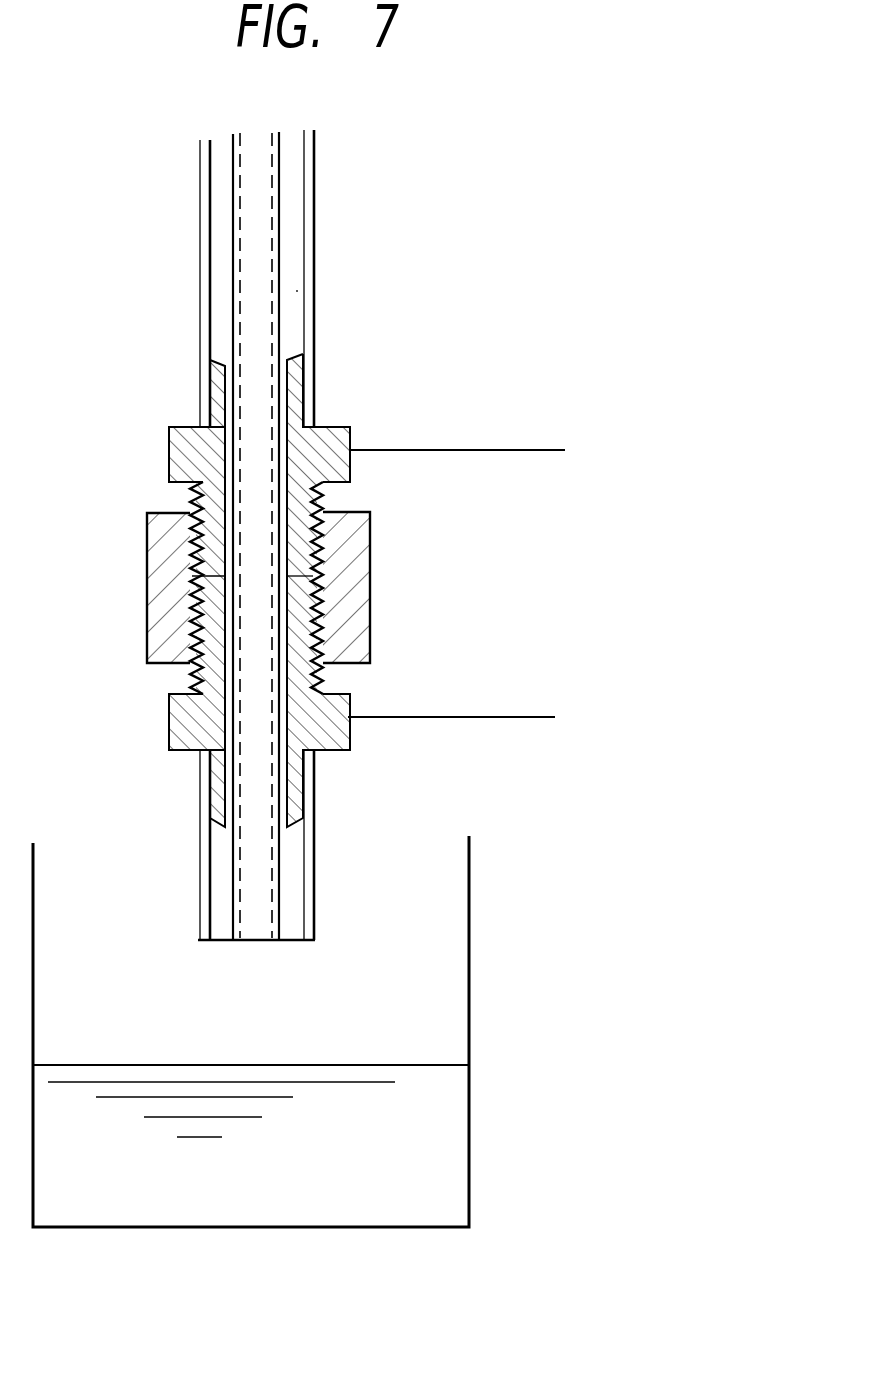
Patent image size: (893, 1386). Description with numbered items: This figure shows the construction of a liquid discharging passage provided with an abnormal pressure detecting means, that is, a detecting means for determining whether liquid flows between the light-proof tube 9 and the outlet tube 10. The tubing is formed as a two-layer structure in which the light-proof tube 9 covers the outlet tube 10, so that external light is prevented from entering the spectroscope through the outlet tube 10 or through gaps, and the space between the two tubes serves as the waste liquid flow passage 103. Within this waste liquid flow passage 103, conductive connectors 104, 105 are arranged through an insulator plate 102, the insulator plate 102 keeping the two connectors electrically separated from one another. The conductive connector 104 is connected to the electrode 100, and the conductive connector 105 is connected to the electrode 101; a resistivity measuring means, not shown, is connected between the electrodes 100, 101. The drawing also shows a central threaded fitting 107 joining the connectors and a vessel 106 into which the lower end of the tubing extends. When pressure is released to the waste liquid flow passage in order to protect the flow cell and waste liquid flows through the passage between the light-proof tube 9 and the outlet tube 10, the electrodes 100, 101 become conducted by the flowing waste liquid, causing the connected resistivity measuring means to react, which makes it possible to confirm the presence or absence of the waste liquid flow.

The light-proof tube 9 is at (318, 230).
The outlet tube 10 is at (280, 155).
The waste liquid flow passage 103 is at (296, 291).
The conductive connector 104 is at (338, 427).
The electrode 100 is at (505, 447).
The union fitting body 107 is at (147, 548).
The insulator plate 102 is at (316, 577).
The conductive connector 105 is at (168, 712).
The electrode 101 is at (522, 716).
The vessel 106 is at (471, 907).